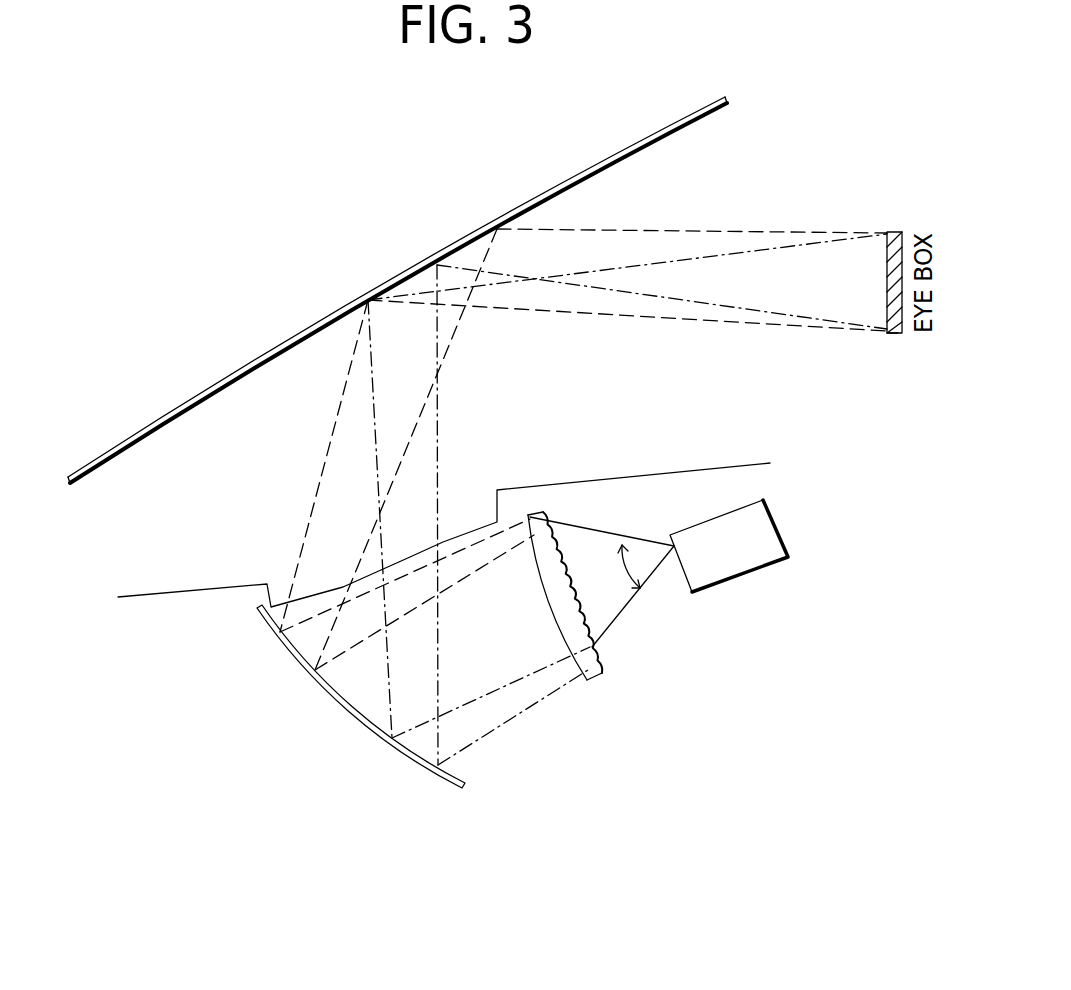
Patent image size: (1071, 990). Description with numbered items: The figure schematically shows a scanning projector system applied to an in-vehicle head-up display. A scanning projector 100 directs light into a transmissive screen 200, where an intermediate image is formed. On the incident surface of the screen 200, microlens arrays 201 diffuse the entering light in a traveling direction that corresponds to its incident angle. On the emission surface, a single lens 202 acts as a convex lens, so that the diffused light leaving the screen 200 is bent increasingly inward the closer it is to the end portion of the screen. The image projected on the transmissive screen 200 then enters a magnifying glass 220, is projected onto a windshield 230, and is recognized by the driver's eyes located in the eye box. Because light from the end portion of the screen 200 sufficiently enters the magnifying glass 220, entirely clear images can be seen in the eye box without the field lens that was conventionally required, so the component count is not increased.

The scanning projector 100 is at (777, 530).
The transmissive screen 200 is at (591, 624).
The microlens arrays 201 is at (604, 651).
The single lens 202 is at (549, 613).
The magnifying glass 220 is at (455, 788).
The windshield 230 is at (223, 378).